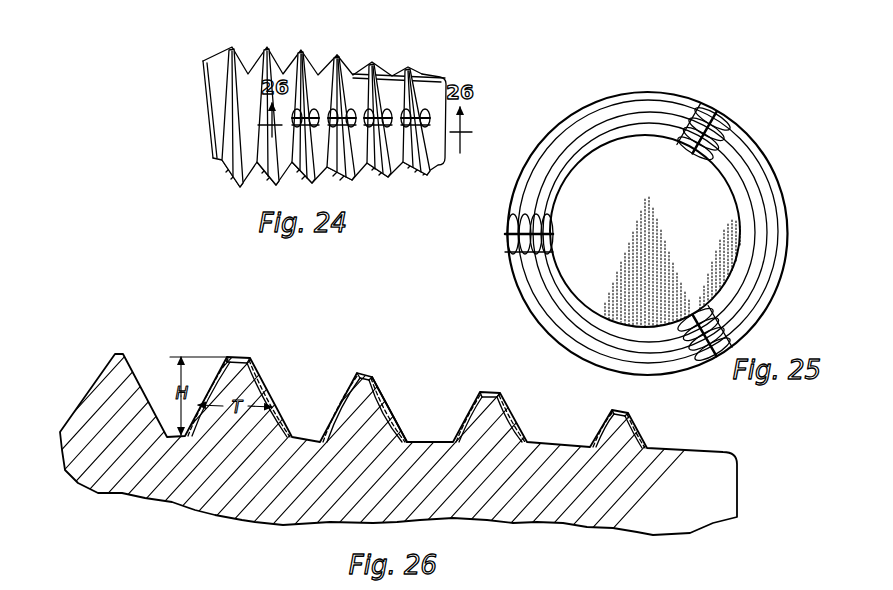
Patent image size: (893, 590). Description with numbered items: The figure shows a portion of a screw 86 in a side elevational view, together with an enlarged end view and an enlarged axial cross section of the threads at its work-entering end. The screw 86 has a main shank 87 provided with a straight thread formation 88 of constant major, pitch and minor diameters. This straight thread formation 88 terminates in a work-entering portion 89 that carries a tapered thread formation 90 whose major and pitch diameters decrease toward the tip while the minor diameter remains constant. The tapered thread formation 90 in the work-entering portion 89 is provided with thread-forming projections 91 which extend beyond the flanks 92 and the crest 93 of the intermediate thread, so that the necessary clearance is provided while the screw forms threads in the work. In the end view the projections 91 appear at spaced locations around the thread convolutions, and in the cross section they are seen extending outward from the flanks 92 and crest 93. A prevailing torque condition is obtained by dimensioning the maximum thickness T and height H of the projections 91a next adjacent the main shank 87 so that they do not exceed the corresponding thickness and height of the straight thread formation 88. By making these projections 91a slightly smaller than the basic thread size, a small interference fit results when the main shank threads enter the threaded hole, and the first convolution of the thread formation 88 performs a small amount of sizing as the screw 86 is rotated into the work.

In FIG. 24, the screw 86 is at (223, 50).
In FIG. 24, the main shank 87 is at (247, 72).
In FIG. 24, the straight thread formation 88 is at (232, 172).
In FIG. 25, the straight thread formation 88 is at (762, 168).
In FIG. 26, the straight thread formation 88 is at (100, 380).
In FIG. 24, the work-entering portion 89 is at (387, 75).
In FIG. 24, the tapered thread formation 90 is at (363, 70).
In FIG. 25, the tapered thread formation 90 is at (592, 130).
In FIG. 26, the tapered thread formation 90 is at (368, 385).
In FIG. 24, the thread-forming projections 91 is at (293, 97).
In FIG. 25, the thread-forming projections 91 is at (708, 120).
In FIG. 26, the thread-forming projections 91 is at (468, 407).
In FIG. 26, the projections next adjacent the main shank 91a is at (218, 395).
In FIG. 26, the flanks 92 is at (333, 407).
In FIG. 26, the crest 93 is at (362, 377).